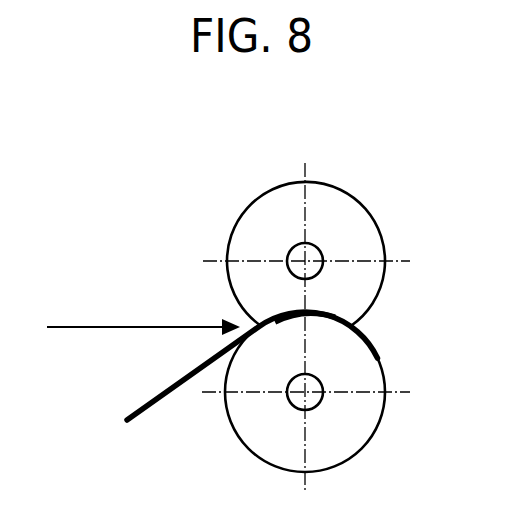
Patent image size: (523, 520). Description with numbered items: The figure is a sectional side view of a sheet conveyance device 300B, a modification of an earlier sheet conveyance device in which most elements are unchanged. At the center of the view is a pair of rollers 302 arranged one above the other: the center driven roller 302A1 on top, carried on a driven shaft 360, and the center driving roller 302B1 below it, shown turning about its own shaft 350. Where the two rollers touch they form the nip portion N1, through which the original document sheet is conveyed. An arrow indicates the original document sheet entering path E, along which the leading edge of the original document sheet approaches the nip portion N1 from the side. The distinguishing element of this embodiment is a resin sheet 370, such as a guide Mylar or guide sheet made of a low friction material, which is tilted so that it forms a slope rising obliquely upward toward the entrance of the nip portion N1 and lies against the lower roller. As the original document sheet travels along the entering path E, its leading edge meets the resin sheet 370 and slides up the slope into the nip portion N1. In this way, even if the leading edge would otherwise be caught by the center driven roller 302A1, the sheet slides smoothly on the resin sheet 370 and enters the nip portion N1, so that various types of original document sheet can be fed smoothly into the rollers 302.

The sheet conveyance device 300B is at (383, 103).
The roller pair 302 is at (398, 216).
The center driven roller 302A1 is at (374, 176).
The center driving roller 302B1 is at (342, 452).
The driven shaft 360 is at (292, 252).
The lower roller shaft 350 is at (320, 378).
The resin sheet 370 is at (150, 406).
The nip portion N1 is at (335, 315).
The original document sheet entering path E is at (143, 318).